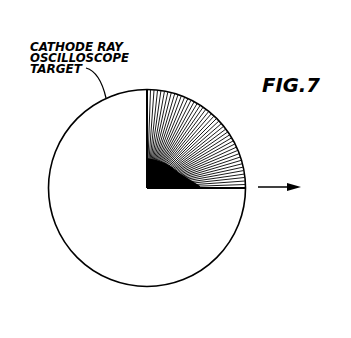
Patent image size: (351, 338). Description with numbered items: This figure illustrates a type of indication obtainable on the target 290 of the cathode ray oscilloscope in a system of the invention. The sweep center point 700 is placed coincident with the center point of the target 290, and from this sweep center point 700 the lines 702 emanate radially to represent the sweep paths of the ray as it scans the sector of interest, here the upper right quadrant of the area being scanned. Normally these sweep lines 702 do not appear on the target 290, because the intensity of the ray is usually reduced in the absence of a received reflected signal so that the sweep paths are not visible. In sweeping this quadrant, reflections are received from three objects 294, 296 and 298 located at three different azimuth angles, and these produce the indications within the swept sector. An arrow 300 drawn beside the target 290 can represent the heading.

The target 290 is at (203, 273).
The sweep center point 700 is at (148, 190).
The sweep lines 702 is at (147, 145).
The object 296 is at (189, 121).
The object 294 is at (213, 128).
The object 298 is at (182, 142).
The arrow 300 is at (262, 188).